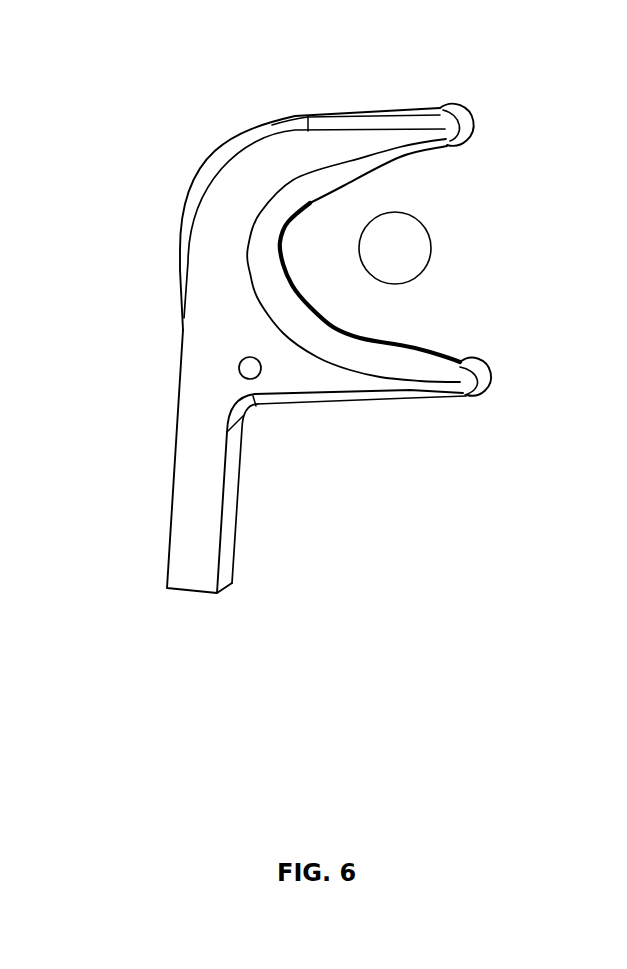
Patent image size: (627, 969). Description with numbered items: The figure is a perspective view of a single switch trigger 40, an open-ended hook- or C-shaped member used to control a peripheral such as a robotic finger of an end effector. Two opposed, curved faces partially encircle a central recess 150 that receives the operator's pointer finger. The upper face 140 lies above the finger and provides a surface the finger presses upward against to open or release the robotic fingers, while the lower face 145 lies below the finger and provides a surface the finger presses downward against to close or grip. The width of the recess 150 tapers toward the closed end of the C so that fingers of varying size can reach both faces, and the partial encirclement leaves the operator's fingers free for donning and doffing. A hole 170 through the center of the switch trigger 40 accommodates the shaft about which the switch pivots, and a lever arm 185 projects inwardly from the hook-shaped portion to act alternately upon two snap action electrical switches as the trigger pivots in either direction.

The switch trigger 40 is at (220, 228).
The upper face 140 is at (420, 139).
The lower face 145 is at (430, 365).
The central recess 150 is at (395, 248).
The hole 170 is at (258, 376).
The lever arm 185 is at (192, 553).